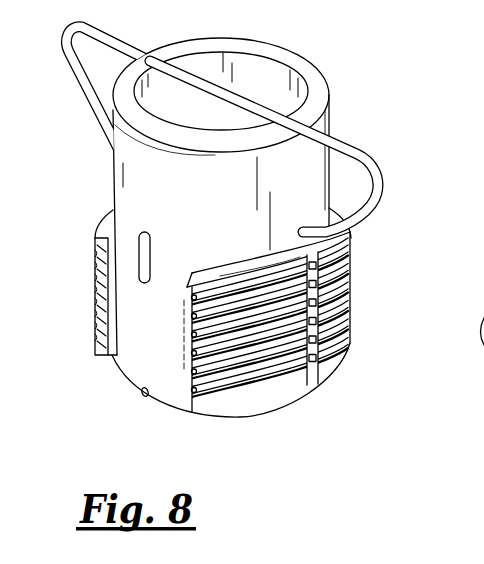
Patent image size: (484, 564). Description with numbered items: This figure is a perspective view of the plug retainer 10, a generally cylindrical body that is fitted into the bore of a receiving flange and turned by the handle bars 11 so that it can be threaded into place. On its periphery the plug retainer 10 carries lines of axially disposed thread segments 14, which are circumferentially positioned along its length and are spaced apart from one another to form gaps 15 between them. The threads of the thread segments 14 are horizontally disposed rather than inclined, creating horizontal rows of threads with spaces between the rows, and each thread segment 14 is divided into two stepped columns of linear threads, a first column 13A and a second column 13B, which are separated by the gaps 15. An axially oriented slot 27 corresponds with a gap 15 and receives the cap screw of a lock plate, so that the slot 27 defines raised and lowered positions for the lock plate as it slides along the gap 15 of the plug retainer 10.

The plug retainer 10 is at (234, 232).
The handle bars 11 is at (340, 148).
The first column of threads 13A is at (97, 302).
The second column of threads 13B is at (253, 373).
The thread segments 14 is at (228, 336).
The gaps 15 is at (147, 350).
The slot 27 is at (150, 247).